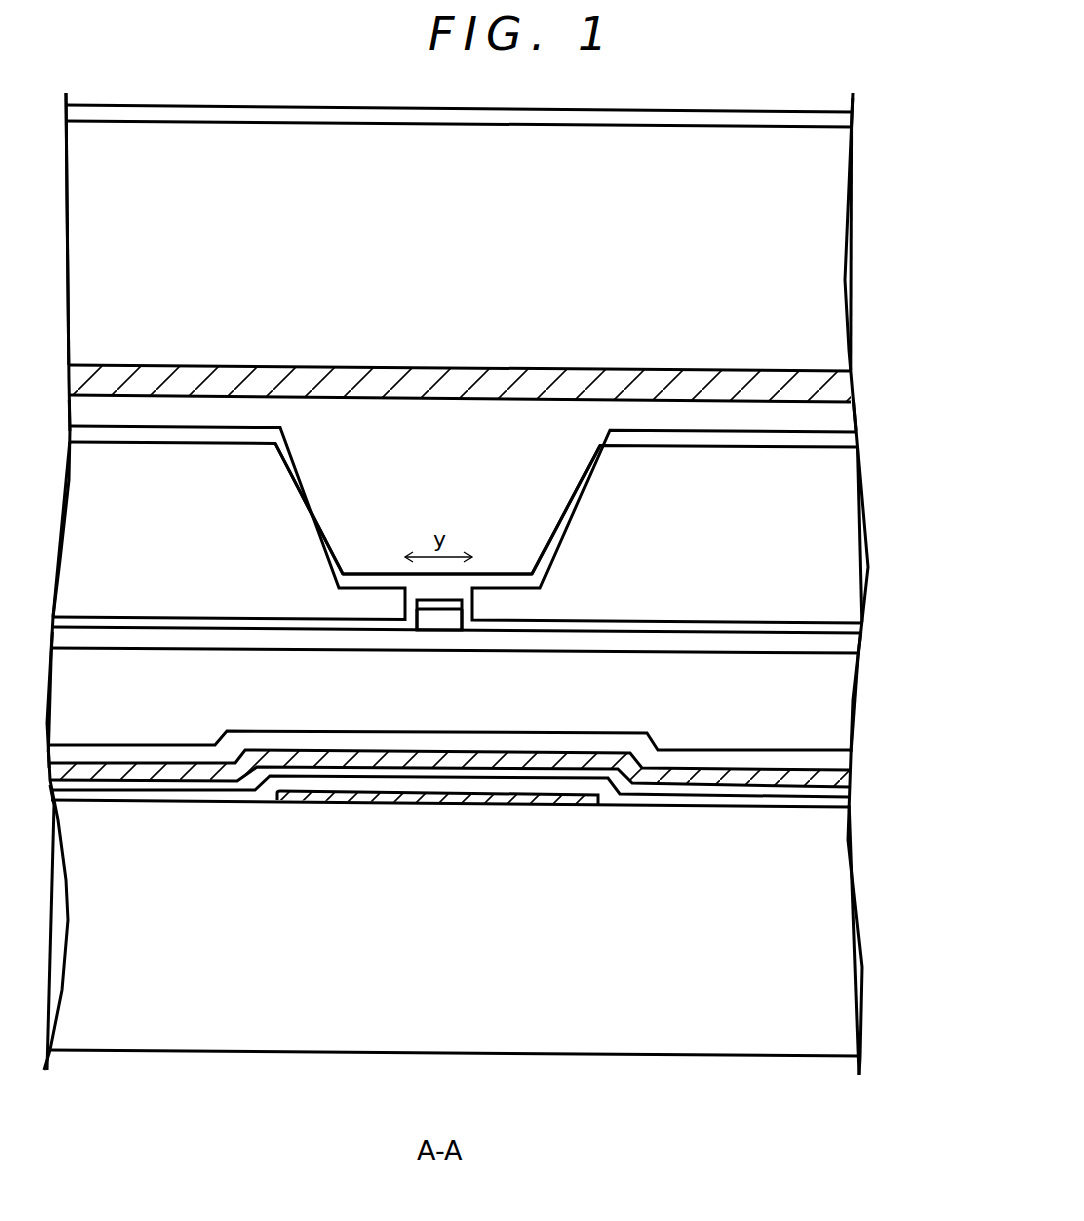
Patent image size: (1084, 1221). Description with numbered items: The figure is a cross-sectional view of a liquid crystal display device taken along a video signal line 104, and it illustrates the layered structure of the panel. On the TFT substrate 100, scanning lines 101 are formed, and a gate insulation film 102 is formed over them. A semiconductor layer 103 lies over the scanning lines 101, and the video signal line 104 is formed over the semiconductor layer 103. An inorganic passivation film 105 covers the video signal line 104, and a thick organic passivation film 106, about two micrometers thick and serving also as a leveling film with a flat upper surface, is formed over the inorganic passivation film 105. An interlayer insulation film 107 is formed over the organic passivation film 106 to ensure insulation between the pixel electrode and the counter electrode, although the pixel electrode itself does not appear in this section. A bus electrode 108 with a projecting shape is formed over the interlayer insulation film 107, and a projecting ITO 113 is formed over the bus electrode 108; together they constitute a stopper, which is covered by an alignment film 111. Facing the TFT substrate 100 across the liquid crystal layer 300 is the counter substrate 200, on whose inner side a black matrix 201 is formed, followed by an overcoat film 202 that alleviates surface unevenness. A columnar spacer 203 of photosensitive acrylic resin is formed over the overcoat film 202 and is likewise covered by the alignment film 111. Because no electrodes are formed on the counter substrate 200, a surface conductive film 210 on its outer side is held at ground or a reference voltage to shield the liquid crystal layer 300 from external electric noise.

The TFT substrate 100 is at (830, 977).
The scanning line 101 is at (440, 802).
The gate insulation film 102 is at (842, 802).
The semiconductor layer 103 is at (840, 790).
The video signal line 104 is at (842, 783).
The inorganic passivation film 105 is at (838, 762).
The organic passivation film 106 is at (845, 710).
The interlayer insulation film 107 is at (850, 645).
The bus electrode 108 is at (442, 622).
The alignment film 111 is at (847, 440).
The projecting ITO 113 is at (453, 607).
The counter substrate 200 is at (832, 254).
The black matrix 201 is at (840, 388).
The overcoat film 202 is at (842, 419).
The columnar spacer 203 is at (547, 483).
The surface conductive film 210 is at (838, 118).
The liquid crystal layer 300 is at (850, 538).